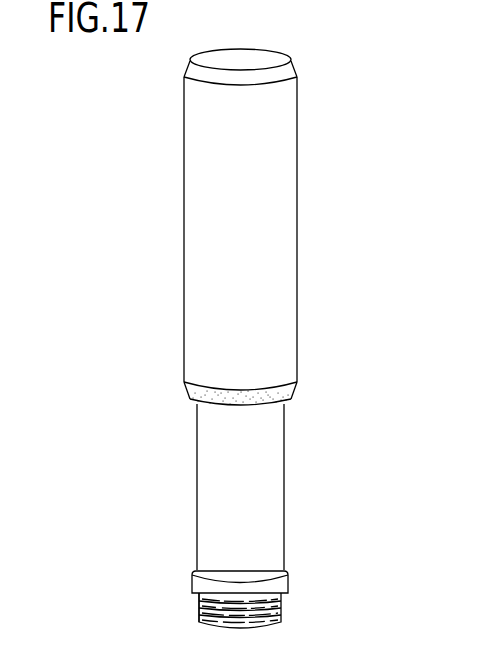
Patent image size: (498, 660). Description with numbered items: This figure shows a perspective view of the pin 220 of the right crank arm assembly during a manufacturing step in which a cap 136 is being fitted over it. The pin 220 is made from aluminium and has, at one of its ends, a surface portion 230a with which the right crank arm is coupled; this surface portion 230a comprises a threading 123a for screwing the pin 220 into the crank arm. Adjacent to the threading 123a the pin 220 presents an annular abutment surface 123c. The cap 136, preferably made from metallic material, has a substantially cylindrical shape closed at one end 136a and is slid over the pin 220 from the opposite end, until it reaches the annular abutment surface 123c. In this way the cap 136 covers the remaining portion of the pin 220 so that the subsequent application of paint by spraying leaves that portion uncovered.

The cap 136 is at (223, 223).
The closed end of the cap 136a is at (305, 68).
The pin 220 is at (303, 432).
The annular abutment surface 123c is at (288, 571).
The threading 123a is at (265, 620).
The surface portion 230a is at (197, 616).